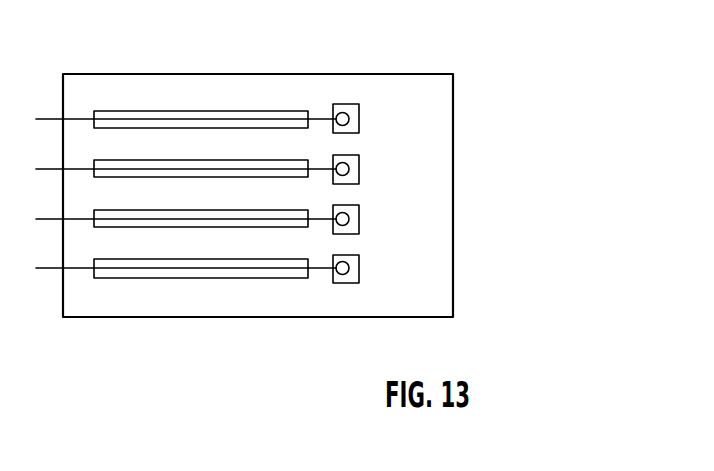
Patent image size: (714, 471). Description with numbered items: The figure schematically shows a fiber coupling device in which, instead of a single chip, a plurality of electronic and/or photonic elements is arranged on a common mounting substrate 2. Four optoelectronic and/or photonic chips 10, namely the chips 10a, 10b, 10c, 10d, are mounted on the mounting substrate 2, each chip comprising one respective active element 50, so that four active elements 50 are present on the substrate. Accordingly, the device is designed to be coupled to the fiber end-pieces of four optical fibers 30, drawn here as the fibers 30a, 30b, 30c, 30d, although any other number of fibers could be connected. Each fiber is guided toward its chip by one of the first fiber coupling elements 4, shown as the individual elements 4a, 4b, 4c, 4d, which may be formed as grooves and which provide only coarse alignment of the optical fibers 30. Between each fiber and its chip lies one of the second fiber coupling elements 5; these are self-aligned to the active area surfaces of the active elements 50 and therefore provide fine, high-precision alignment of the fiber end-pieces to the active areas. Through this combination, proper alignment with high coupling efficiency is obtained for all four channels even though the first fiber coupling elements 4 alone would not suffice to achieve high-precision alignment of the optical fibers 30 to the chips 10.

The mounting substrate 2 is at (387, 83).
The first fiber coupling elements 4 is at (172, 203).
The first fiber coupling element 4a is at (172, 119).
The first fiber coupling element 4b is at (172, 168).
The first fiber coupling element 4c is at (172, 218).
The first fiber coupling element 4d is at (172, 268).
The second fiber coupling elements 5 is at (265, 261).
The optoelectronic and/or photonic chips 10 is at (473, 193).
The optoelectronic and/or photonic chip 10a is at (346, 118).
The optoelectronic and/or photonic chip 10b is at (346, 169).
The optoelectronic and/or photonic chip 10c is at (346, 219).
The optoelectronic and/or photonic chip 10d is at (349, 268).
The optical fibers 30 is at (172, 156).
The optical fiber 30a is at (172, 119).
The optical fiber 30b is at (172, 168).
The optical fiber 30c is at (172, 218).
The optical fiber 30d is at (172, 268).
The active elements 50 is at (264, 261).